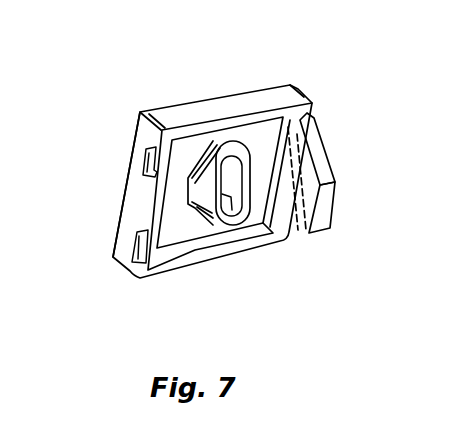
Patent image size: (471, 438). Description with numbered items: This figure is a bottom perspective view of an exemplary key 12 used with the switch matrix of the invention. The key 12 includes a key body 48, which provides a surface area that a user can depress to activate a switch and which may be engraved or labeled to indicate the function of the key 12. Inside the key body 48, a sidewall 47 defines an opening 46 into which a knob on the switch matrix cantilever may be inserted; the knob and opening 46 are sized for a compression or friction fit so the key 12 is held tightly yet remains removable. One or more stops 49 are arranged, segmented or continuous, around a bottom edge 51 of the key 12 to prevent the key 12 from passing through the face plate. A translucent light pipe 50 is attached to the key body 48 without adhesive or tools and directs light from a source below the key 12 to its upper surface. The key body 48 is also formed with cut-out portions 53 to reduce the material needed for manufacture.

The key 12 is at (270, 92).
The opening 46 is at (233, 219).
The sidewall 47 is at (202, 203).
The key body 48 is at (132, 223).
The stops 49 is at (147, 161).
The light pipe 50 is at (334, 177).
The bottom edge 51 is at (135, 208).
The cut-out portions 53 is at (280, 163).